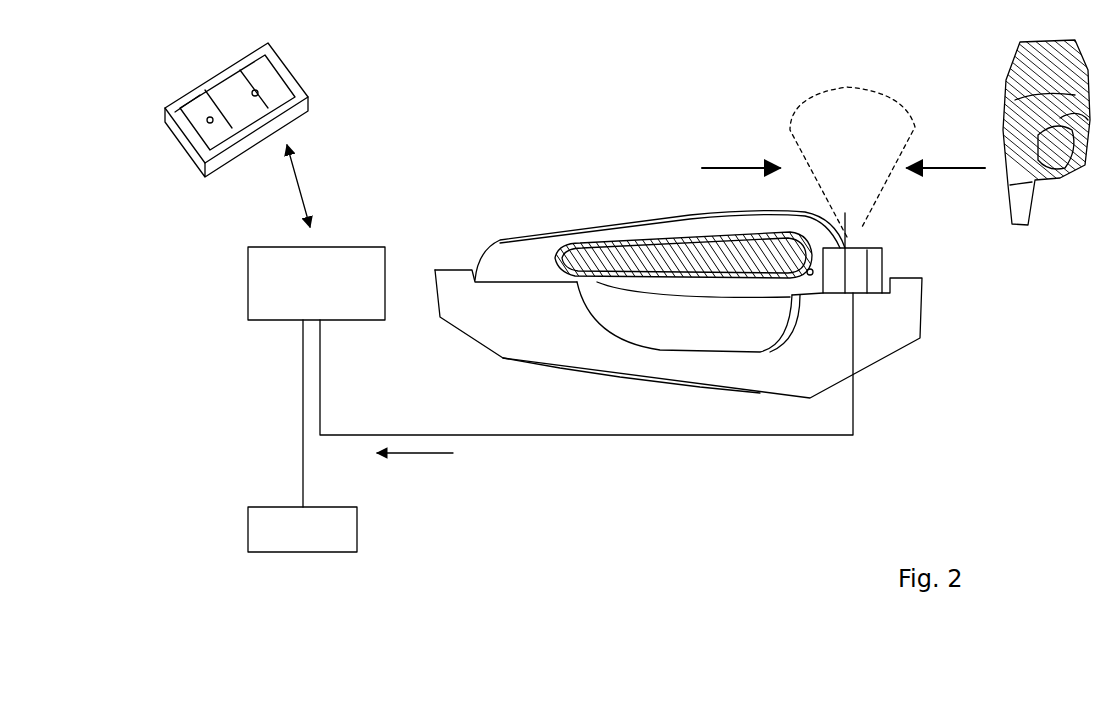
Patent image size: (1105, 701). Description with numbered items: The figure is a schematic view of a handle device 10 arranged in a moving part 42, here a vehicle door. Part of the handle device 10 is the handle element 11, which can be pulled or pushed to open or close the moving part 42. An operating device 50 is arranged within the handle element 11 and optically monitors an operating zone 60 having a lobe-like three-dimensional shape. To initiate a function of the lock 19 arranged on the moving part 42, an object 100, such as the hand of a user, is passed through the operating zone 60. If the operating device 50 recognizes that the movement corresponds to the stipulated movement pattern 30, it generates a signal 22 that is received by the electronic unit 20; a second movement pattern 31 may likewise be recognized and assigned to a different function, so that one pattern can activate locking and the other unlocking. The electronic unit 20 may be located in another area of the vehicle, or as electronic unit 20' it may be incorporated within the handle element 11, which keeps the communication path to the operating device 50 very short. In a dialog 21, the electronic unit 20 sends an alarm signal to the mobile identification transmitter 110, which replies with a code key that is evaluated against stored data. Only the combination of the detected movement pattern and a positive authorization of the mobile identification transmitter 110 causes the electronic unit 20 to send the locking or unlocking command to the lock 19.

The handle device 10 is at (568, 504).
The handle element 11 is at (665, 240).
The lock 19 is at (303, 540).
The electronic unit 20 is at (550, 352).
The electronic unit 20' is at (688, 229).
The dialog 21 is at (305, 202).
The signal 22 is at (417, 453).
The movement pattern 30 is at (948, 168).
The second movement pattern 31 is at (718, 168).
The moving part 42 is at (870, 338).
The operating device 50 is at (868, 270).
The operating zone 60 is at (868, 117).
The object 100 is at (1030, 207).
The mobile identification transmitter 110 is at (203, 162).